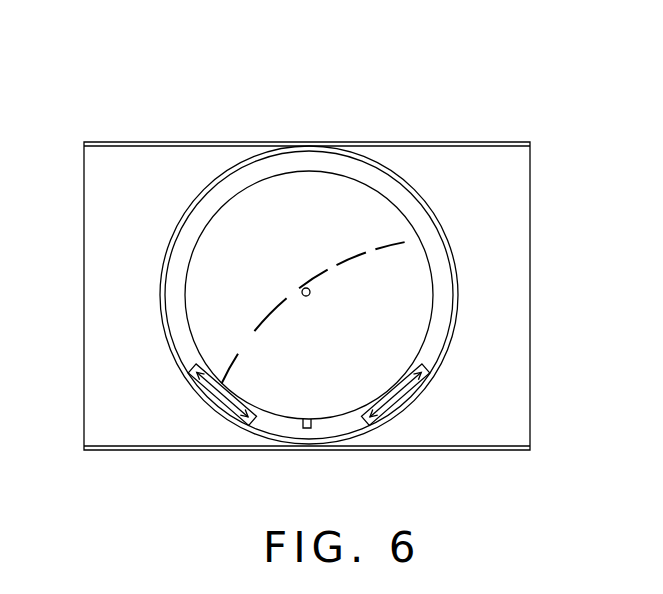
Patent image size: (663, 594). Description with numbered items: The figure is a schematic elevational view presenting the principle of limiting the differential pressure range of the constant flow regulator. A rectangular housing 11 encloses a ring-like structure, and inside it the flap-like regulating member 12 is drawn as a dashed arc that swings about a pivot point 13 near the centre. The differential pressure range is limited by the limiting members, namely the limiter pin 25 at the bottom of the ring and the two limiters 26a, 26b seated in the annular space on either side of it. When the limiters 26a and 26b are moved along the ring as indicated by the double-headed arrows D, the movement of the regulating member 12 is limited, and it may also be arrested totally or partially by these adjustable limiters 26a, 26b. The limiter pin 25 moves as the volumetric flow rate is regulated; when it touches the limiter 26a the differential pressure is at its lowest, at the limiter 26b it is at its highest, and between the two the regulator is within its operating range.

The housing 11 is at (457, 142).
The regulating member 12 is at (345, 262).
The pivot axis 13 is at (310, 294).
The limiter pin 25 is at (312, 424).
The limiter 26a is at (245, 418).
The limiter 26b is at (378, 418).
The arrows D is at (202, 400).